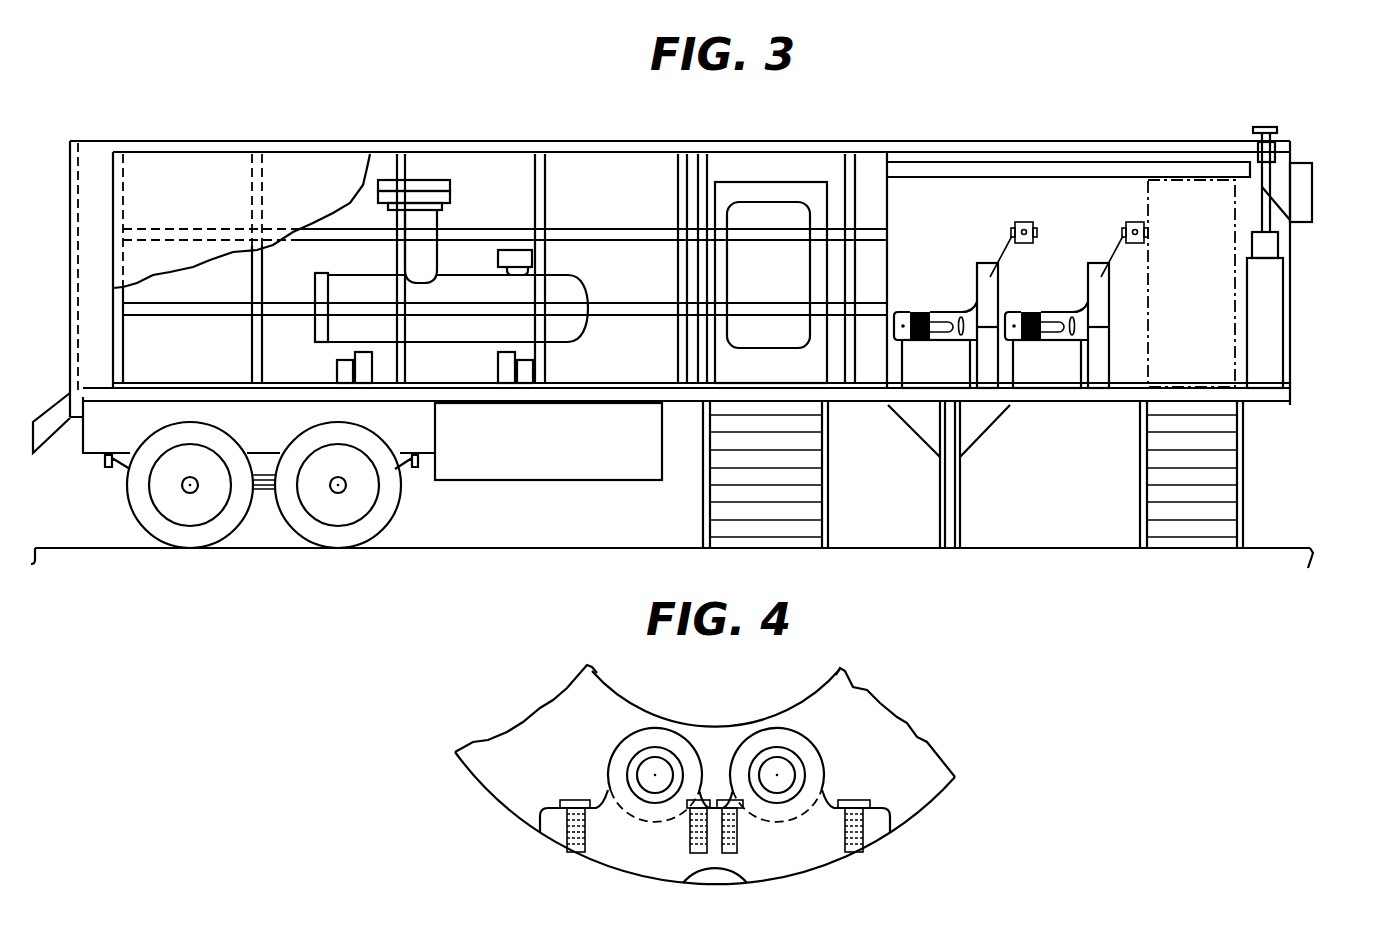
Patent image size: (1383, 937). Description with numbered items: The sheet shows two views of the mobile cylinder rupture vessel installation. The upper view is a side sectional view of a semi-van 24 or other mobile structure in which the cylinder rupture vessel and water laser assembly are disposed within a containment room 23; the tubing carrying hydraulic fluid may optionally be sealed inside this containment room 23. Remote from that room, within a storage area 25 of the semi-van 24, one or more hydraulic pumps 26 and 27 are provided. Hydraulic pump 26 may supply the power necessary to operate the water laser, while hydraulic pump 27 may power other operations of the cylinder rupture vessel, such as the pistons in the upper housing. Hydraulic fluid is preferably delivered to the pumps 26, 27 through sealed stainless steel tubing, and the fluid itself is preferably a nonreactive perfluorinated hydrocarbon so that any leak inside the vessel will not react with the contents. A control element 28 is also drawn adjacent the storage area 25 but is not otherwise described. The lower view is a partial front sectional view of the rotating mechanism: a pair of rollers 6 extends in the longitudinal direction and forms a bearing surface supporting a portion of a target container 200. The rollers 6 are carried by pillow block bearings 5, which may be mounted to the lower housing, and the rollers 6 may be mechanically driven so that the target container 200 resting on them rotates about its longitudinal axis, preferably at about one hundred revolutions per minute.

In FIG. 3, the containment room 23 is at (545, 142).
In FIG. 3, the semi-van 24 is at (425, 430).
In FIG. 3, the storage area 25 is at (1023, 201).
In FIG. 3, the hydraulic pump 26 is at (953, 357).
In FIG. 3, the hydraulic pump 27 is at (1060, 358).
In FIG. 3, the control box 28 is at (1314, 193).
In FIG. 4, the pillow block bearings 5 is at (613, 775).
In FIG. 4, the rollers 6 is at (660, 765).
In FIG. 4, the target container 200 is at (850, 685).